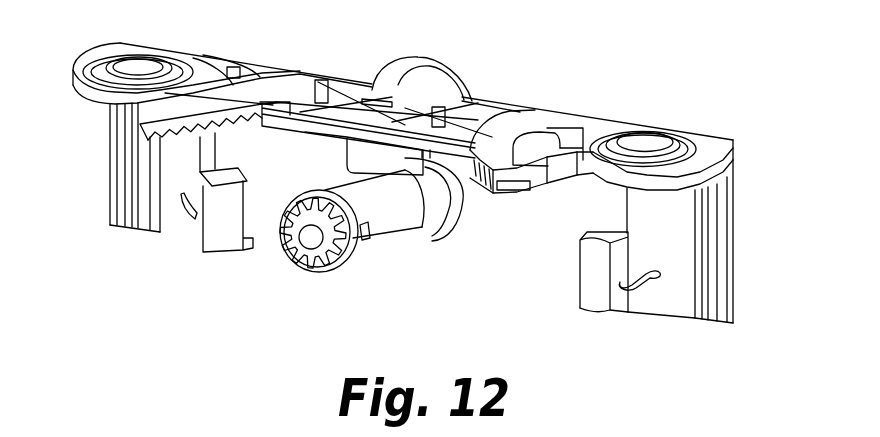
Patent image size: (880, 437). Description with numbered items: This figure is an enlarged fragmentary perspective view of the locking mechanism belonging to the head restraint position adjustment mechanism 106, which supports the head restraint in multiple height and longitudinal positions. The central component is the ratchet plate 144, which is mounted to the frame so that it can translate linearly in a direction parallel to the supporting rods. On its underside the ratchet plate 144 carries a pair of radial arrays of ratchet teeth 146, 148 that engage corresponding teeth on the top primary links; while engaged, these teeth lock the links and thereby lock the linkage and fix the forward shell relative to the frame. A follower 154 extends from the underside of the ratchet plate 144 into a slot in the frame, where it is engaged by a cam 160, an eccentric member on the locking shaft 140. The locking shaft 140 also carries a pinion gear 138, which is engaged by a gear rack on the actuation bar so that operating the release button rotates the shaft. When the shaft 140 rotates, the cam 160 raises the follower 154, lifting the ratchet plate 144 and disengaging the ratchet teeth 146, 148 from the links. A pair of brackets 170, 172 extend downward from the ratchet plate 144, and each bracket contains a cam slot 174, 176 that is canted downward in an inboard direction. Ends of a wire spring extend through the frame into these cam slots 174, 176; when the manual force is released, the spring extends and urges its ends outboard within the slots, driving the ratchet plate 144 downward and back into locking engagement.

The head restraint position adjustment mechanism 106 is at (633, 87).
The pinion gear 138 is at (310, 262).
The locking shaft 140 is at (376, 244).
The ratchet plate 144 is at (516, 104).
The ratchet teeth 146 is at (150, 139).
The ratchet teeth 148 is at (512, 192).
The follower 154 is at (362, 157).
The cam 160 is at (396, 236).
The bracket 170 is at (168, 231).
The bracket 172 is at (667, 317).
The cam slot 174 is at (196, 219).
The cam slot 176 is at (625, 293).